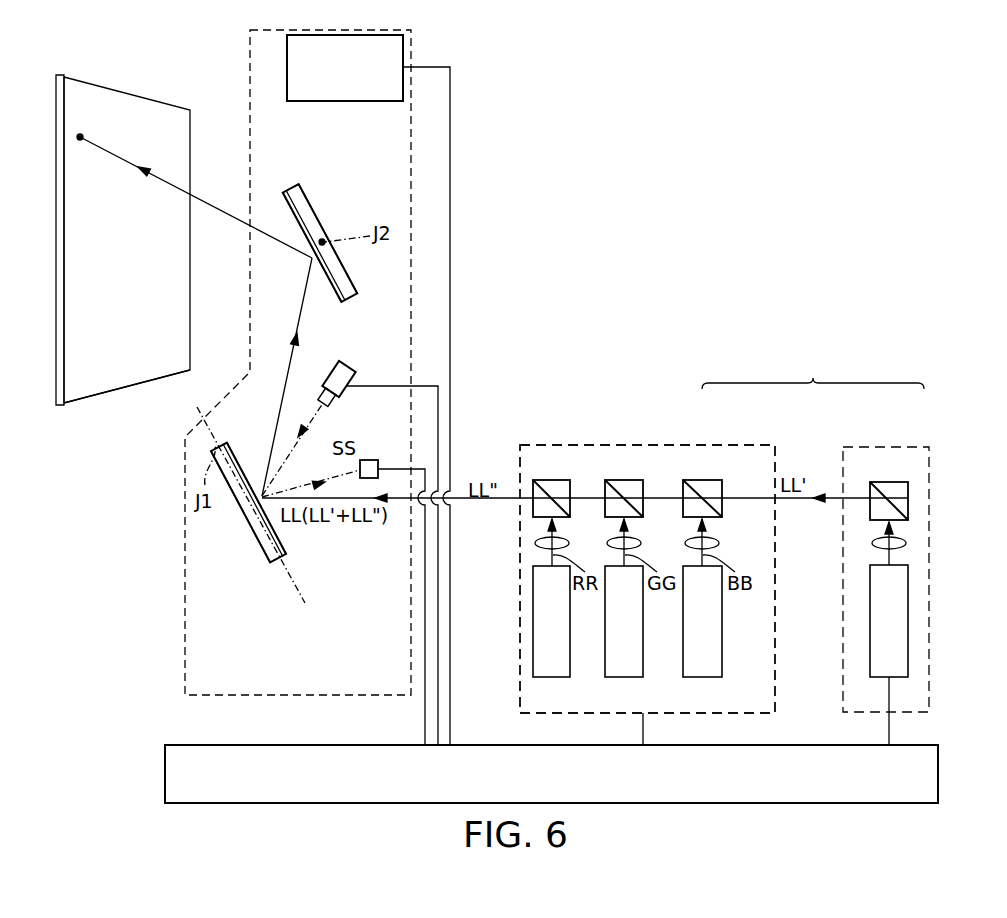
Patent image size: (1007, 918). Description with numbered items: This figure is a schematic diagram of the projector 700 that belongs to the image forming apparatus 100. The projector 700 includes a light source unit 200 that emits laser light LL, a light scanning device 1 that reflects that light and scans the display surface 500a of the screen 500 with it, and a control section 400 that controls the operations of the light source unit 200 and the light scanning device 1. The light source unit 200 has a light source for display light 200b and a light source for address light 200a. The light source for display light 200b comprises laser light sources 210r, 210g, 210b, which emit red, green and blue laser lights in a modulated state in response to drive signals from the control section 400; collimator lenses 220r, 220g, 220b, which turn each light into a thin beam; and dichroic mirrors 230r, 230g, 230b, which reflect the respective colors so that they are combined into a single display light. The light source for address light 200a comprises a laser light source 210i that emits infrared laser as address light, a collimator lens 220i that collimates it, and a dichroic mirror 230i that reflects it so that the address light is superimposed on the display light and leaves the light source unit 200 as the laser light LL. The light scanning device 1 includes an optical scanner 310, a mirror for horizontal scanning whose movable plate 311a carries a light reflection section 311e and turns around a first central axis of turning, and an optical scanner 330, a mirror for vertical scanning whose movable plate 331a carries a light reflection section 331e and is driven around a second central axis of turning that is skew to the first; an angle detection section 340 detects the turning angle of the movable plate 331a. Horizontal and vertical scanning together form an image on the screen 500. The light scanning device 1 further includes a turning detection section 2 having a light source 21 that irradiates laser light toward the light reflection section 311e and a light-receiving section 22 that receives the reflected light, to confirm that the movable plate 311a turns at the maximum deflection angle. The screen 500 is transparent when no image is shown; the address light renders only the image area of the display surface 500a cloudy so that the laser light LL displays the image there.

The light scanning device 1 is at (183, 537).
The turning detection section 2 is at (357, 399).
The light source 21 is at (332, 363).
The light-receiving section 22 is at (368, 460).
The image forming apparatus 100 is at (546, 89).
The light source unit 200 is at (813, 372).
The light source for address light 200a is at (863, 447).
The light source for display light 200b is at (702, 445).
The laser light source 210r is at (552, 670).
The laser light source 210g is at (624, 670).
The laser light source 210b is at (702, 670).
The laser light source 210i is at (903, 650).
The collimator lens 220r is at (562, 541).
The collimator lens 220g is at (634, 541).
The collimator lens 220b is at (712, 541).
The collimator lens 220i is at (906, 542).
The dichroic mirror 230r is at (575, 472).
The dichroic mirror 230g is at (647, 472).
The dichroic mirror 230b is at (725, 472).
The dichroic mirror 230i is at (905, 494).
The optical scanner 310 is at (238, 528).
The movable plate 311a is at (284, 548).
The light reflection section 311e is at (228, 447).
The optical scanner 330 is at (358, 270).
The movable plate 331a is at (312, 215).
The light reflection section 331e is at (285, 202).
The angle detection section 340 is at (360, 103).
The control section 400 is at (165, 775).
The screen 500 is at (135, 93).
The display surface 500a is at (110, 378).
The projector 700 is at (547, 412).